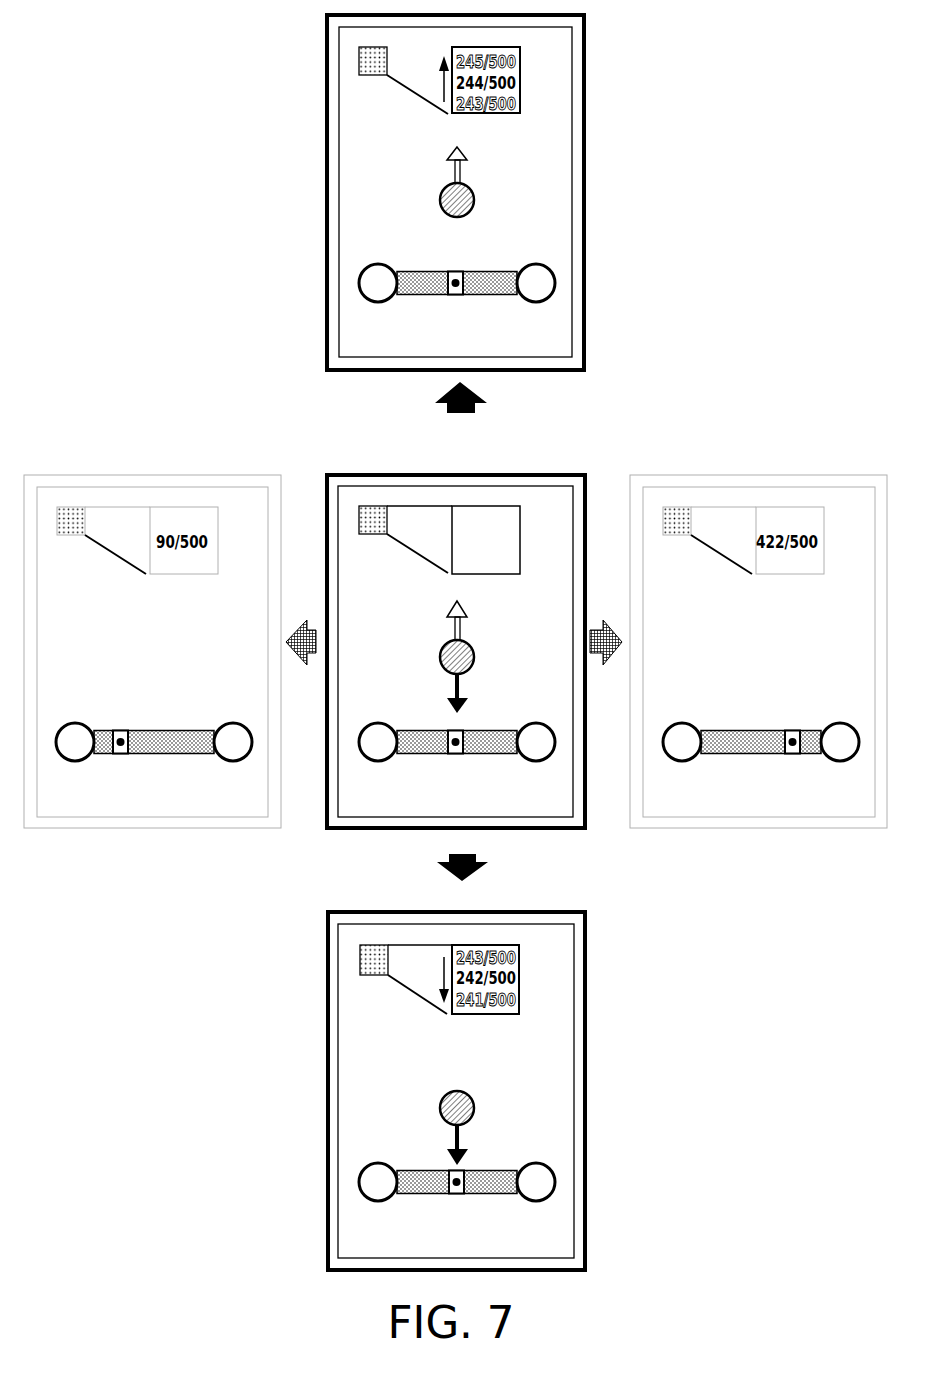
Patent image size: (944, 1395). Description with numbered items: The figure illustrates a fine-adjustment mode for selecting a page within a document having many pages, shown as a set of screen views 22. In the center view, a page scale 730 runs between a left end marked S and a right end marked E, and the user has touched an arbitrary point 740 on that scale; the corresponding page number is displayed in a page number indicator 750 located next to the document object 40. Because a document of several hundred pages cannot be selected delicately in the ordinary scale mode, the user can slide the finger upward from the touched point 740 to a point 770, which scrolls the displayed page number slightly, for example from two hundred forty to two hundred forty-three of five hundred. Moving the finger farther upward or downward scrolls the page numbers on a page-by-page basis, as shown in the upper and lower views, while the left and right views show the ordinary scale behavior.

The display screen 22 is at (555, 486).
The document object 40 is at (375, 506).
The page number indicator 750 is at (470, 506).
The point 770 is at (443, 656).
The slider bar 730 is at (410, 731).
The arbitrary point 740 is at (449, 754).